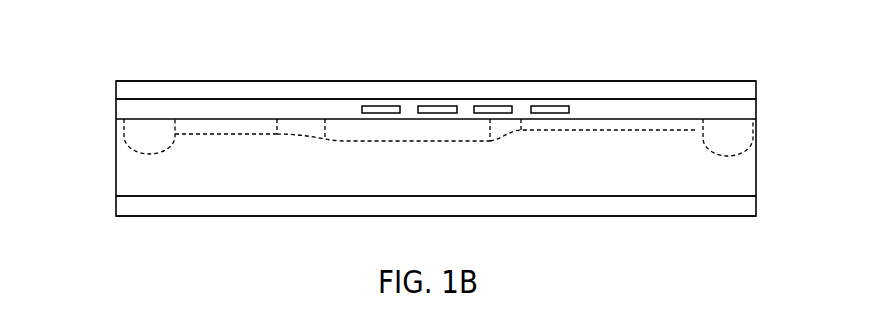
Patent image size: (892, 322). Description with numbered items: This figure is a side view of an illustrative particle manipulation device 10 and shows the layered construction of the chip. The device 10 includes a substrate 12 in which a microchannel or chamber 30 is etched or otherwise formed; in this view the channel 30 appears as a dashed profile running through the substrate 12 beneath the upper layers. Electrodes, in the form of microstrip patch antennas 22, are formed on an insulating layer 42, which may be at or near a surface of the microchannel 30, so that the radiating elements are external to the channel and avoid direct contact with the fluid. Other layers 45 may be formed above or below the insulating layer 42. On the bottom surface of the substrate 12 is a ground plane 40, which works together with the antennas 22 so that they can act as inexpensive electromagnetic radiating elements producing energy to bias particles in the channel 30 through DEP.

The particle manipulation device 10 is at (115, 153).
The substrate 12 is at (150, 180).
The microstrip patch antenna 22 is at (550, 99).
The microchannel 30 is at (670, 132).
The ground plane 40 is at (756, 205).
The insulating layer 42 is at (756, 105).
The other layers 45 is at (756, 82).